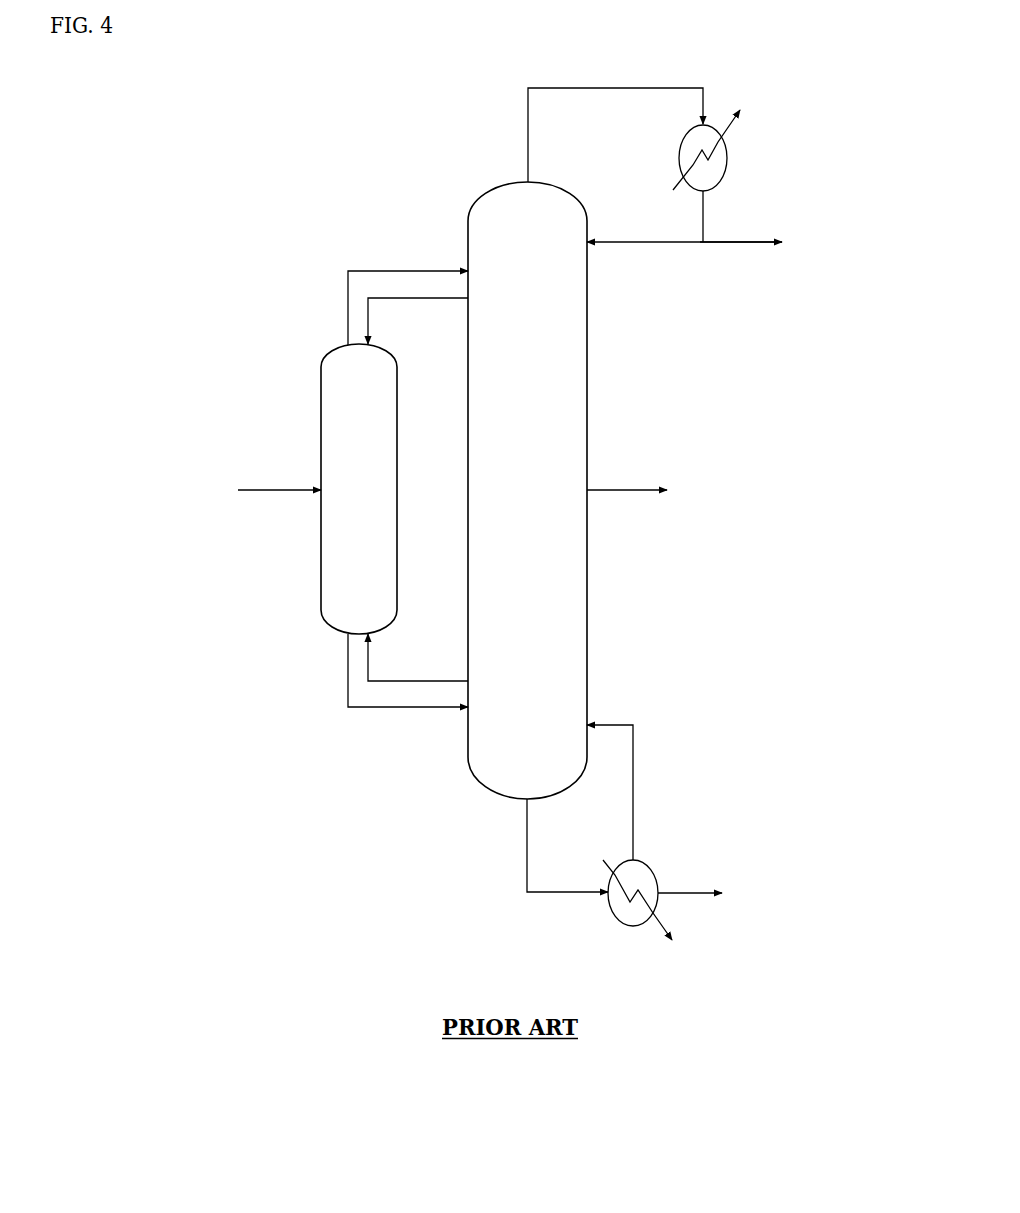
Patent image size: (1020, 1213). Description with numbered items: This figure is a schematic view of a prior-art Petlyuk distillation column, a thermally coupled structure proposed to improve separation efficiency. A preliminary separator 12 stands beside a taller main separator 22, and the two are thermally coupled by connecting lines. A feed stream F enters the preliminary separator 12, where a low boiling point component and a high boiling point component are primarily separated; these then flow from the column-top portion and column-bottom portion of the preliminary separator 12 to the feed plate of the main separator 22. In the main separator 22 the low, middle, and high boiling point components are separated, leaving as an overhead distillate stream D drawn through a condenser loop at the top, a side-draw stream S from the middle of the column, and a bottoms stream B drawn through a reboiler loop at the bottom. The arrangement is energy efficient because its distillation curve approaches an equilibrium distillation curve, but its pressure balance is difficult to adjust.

The preliminary separator 12 is at (321, 428).
The main separator 22 is at (587, 402).
The feed stream F is at (271, 492).
The side-draw stream S is at (638, 491).
The distillate stream D is at (695, 243).
The bottoms stream B is at (702, 893).